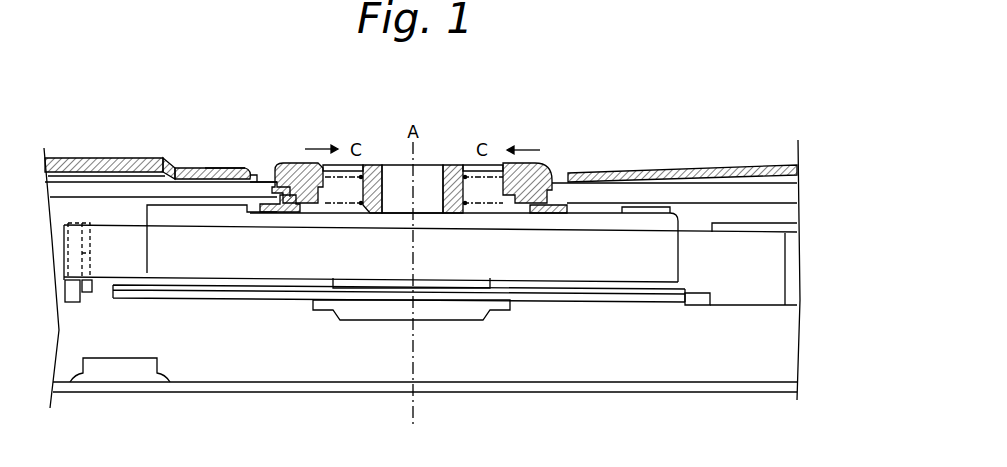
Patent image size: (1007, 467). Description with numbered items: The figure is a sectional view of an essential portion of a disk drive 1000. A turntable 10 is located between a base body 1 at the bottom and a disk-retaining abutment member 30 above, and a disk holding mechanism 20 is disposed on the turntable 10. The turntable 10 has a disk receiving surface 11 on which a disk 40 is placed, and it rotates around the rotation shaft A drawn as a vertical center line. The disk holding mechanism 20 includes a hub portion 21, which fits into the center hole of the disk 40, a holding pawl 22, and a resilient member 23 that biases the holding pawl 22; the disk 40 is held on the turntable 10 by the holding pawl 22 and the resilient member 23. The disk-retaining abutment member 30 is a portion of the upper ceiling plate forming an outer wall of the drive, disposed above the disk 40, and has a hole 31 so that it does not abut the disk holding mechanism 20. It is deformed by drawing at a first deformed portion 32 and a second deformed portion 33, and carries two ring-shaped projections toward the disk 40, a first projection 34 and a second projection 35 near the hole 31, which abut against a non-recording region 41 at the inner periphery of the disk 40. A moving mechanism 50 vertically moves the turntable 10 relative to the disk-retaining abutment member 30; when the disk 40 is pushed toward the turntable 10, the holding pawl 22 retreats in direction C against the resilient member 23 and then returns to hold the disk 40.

The disk drive 1000 is at (630, 125).
The base body 1 is at (636, 388).
The turntable 10 is at (235, 263).
The disk receiving surface 11 is at (170, 206).
The disk holding mechanism 20 is at (452, 167).
The hub portion 21 is at (372, 165).
The holding pawl 22 is at (300, 160).
The resilient member 23 is at (362, 205).
The disk-retaining abutment member 30 is at (130, 160).
The hole 31 is at (266, 178).
The first deformed portion 32 is at (163, 158).
The second deformed portion 33 is at (235, 168).
The first projection 34 is at (202, 168).
The second projection 35 is at (251, 178).
The disk 40 is at (95, 188).
The non-recording region 41 is at (253, 190).
The moving mechanism 50 is at (732, 302).